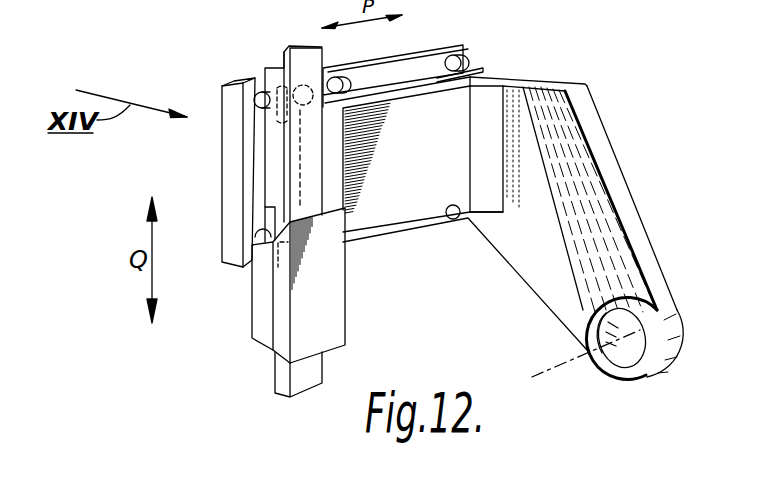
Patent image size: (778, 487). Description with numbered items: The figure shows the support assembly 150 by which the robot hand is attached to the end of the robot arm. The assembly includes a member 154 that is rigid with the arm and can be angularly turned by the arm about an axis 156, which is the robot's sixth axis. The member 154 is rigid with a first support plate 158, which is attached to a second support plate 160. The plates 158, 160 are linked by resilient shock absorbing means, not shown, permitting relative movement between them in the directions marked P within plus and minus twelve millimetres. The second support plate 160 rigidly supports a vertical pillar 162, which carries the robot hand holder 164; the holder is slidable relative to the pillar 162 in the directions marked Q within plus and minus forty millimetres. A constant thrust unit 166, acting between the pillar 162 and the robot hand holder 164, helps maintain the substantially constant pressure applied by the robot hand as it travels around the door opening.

The support assembly 150 is at (432, 303).
The member 154 is at (623, 187).
The axis 156 is at (553, 370).
The first support plate 158 is at (425, 169).
The second support plate 160 is at (428, 47).
The vertical pillar 162 is at (283, 62).
The robot hand holder 164 is at (270, 360).
The constant thrust unit 166 is at (293, 170).